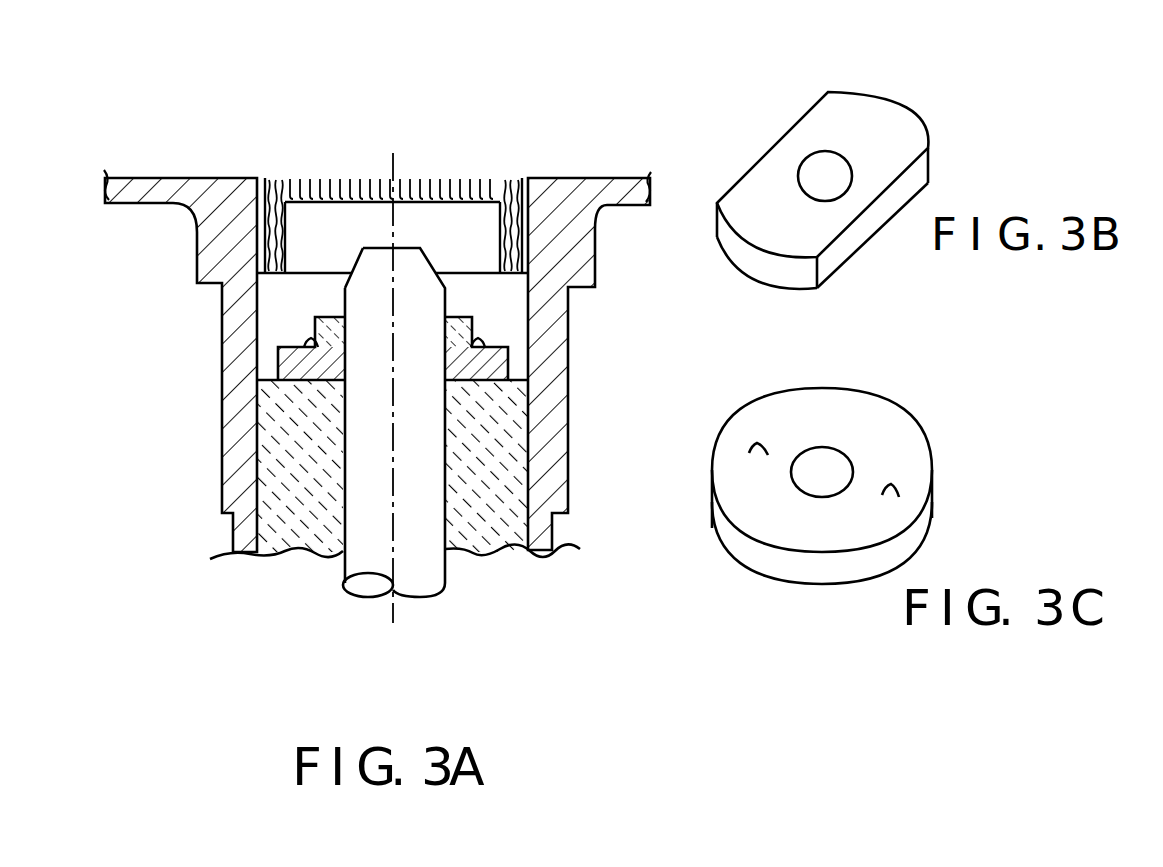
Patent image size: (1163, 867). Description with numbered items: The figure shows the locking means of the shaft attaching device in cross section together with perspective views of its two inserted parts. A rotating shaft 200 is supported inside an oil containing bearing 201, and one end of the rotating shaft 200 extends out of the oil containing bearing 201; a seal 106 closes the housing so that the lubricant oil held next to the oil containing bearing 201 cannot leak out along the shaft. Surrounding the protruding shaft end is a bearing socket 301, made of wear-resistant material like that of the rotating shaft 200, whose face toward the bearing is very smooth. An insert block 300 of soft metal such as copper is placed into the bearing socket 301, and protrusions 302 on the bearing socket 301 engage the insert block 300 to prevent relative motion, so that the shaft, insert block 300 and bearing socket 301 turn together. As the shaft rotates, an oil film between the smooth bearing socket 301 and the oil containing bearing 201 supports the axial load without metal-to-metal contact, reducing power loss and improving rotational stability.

In FIG. 3A, the seal 106 is at (432, 177).
In FIG. 3A, the rotating shaft 200 is at (360, 555).
In FIG. 3A, the oil containing bearing 201 is at (522, 552).
In FIG. 3B, the insert block 300 is at (887, 140).
In FIG. 3C, the bearing socket 301 is at (883, 433).
In FIG. 3A, the protrusions 302 is at (303, 335).
In FIG. 3C, the protrusions 302 is at (903, 482).